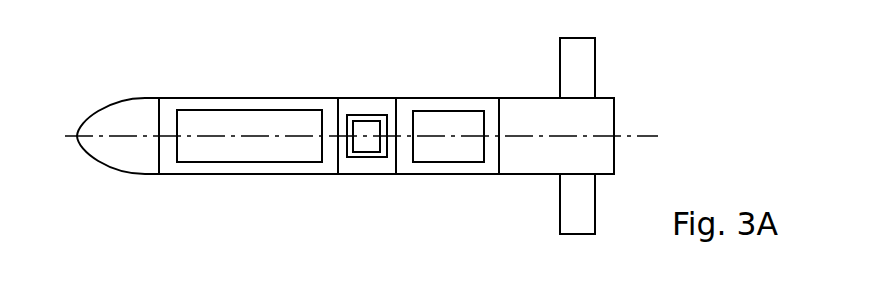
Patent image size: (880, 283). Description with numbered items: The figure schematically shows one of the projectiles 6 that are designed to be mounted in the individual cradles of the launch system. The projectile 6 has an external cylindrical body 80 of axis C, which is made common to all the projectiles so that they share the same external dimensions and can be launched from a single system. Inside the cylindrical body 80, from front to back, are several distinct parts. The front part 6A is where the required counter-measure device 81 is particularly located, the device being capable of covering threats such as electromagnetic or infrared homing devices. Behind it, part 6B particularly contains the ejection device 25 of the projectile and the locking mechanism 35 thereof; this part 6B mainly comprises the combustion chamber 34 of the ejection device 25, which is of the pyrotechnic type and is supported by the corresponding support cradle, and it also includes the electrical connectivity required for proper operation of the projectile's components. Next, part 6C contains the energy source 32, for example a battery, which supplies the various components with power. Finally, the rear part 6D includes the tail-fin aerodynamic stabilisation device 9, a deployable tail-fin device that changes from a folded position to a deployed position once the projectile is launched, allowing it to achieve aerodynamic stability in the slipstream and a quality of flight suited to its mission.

The projectile 6 is at (82, 78).
The part 6A is at (240, 105).
The part 6B is at (367, 105).
The part 6C is at (453, 105).
The part 6D is at (533, 105).
The external cylindrical body 80 is at (162, 175).
The counter-measure device 81 is at (218, 172).
The combustion chamber 34 is at (353, 157).
The ejection device 25 is at (386, 195).
The locking mechanism 35 is at (375, 152).
The energy source 32 is at (470, 162).
The tail-fin device 9 is at (560, 200).
The axis C is at (640, 135).